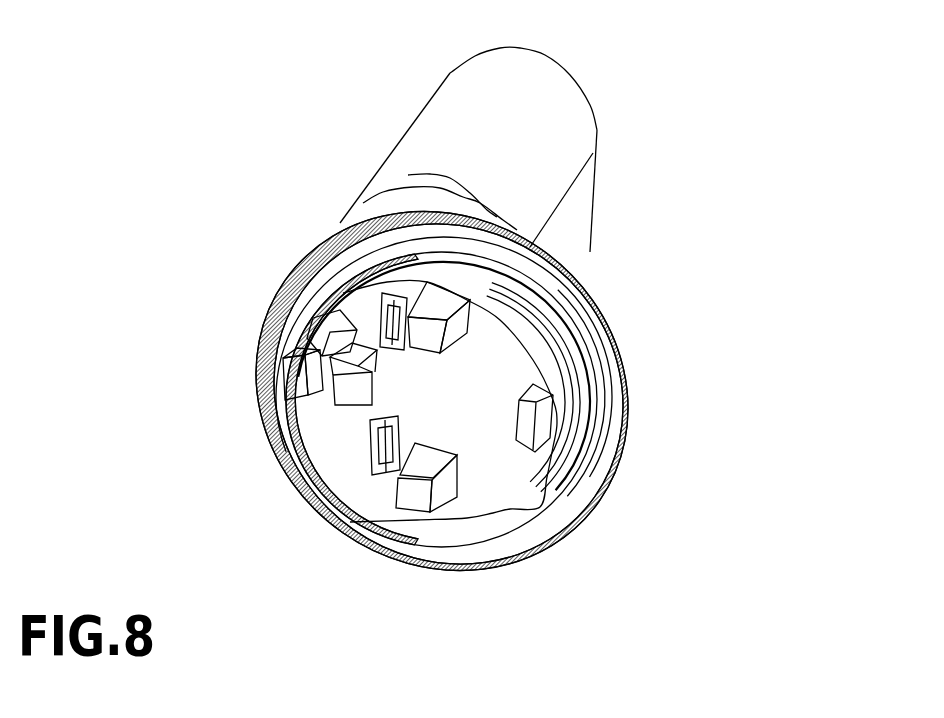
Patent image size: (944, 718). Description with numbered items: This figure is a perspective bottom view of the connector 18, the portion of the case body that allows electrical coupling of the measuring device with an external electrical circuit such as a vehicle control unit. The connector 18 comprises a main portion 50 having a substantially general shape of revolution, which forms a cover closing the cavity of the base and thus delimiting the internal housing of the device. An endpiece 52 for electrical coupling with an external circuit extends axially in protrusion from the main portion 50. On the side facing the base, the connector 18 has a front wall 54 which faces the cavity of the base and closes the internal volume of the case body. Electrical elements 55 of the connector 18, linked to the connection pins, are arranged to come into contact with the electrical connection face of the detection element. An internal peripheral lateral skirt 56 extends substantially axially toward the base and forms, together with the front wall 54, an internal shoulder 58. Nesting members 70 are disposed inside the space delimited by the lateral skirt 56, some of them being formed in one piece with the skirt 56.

The connector 18 is at (650, 352).
The main portion 50 is at (290, 283).
The endpiece 52 is at (455, 135).
The front wall 54 is at (498, 345).
The electrical elements 55 is at (378, 430).
The internal peripheral lateral skirt 56 is at (545, 507).
The internal shoulder 58 is at (622, 402).
The nesting members 70 is at (410, 493).